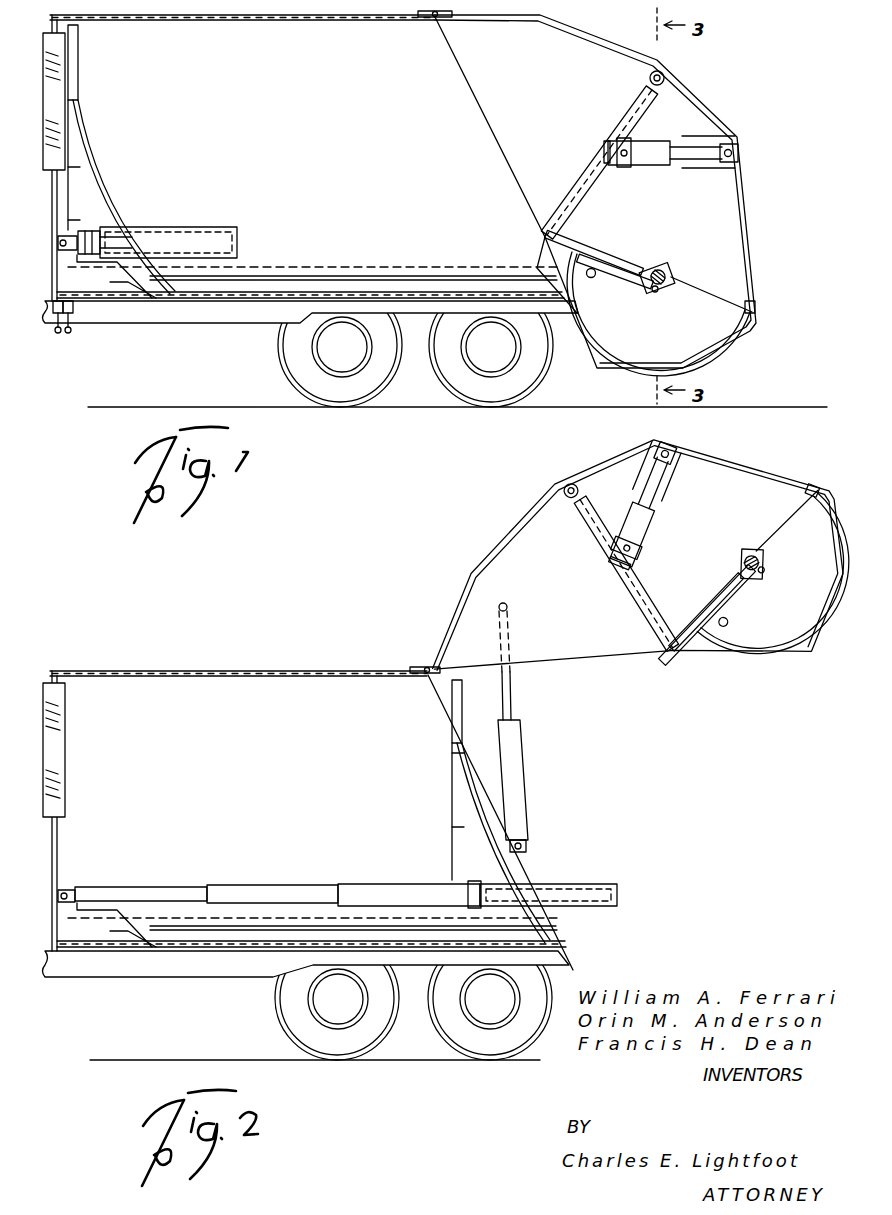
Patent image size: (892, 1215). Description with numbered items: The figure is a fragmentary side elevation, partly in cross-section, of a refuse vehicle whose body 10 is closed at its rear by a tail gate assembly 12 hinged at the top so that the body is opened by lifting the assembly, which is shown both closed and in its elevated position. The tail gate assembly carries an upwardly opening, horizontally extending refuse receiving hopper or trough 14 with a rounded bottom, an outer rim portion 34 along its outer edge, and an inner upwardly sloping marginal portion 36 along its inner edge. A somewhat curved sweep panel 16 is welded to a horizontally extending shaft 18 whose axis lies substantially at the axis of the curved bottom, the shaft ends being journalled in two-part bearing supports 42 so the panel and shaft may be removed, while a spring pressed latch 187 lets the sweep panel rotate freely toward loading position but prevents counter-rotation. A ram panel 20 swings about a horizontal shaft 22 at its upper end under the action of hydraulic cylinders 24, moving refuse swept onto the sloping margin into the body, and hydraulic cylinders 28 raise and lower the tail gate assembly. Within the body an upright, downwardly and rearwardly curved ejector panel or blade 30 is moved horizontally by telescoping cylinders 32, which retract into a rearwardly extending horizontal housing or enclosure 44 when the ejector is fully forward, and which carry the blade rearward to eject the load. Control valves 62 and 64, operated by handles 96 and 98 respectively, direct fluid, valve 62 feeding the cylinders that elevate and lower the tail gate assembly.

In FIG. 1, the body 10 is at (312, 259).
In FIG. 2, the body 10 is at (250, 671).
In FIG. 1, the tail gate assembly 12 is at (734, 122).
In FIG. 2, the tail gate assembly 12 is at (745, 456).
In FIG. 1, the refuse receiving hopper or trough 14 is at (600, 348).
In FIG. 2, the refuse receiving hopper or trough 14 is at (792, 645).
In FIG. 1, the sweep panel 16 is at (616, 265).
In FIG. 2, the sweep panel 16 is at (720, 605).
In FIG. 1, the shaft 18 is at (662, 270).
In FIG. 2, the shaft 18 is at (754, 552).
In FIG. 1, the spring pressed latch 187 is at (593, 278).
In FIG. 2, the spring pressed latch 187 is at (732, 623).
In FIG. 1, the ram panel 20 is at (580, 176).
In FIG. 2, the ram panel 20 is at (636, 627).
In FIG. 1, the horizontal shaft 22 is at (664, 76).
In FIG. 2, the horizontal shaft 22 is at (564, 492).
In FIG. 1, the hydraulic cylinders 24 is at (660, 142).
In FIG. 2, the hydraulic cylinders 24 is at (630, 511).
In FIG. 2, the hydraulic cylinders 28 is at (528, 752).
In FIG. 1, the ejector panel or blade 30 is at (95, 145).
In FIG. 2, the ejector panel or blade 30 is at (462, 784).
In FIG. 1, the telescoping cylinders 32 is at (110, 237).
In FIG. 2, the telescoping cylinders 32 is at (270, 888).
In FIG. 1, the outer rim portion 34 is at (756, 304).
In FIG. 2, the outer rim portion 34 is at (813, 496).
In FIG. 1, the inner upwardly sloping marginal portion 36 is at (586, 238).
In FIG. 2, the inner upwardly sloping marginal portion 36 is at (686, 656).
In FIG. 1, the bearing supports 42 is at (657, 293).
In FIG. 2, the bearing supports 42 is at (736, 562).
In FIG. 1, the horizontal housing or enclosure 44 is at (192, 227).
In FIG. 2, the horizontal housing or enclosure 44 is at (593, 884).
In FIG. 1, the control valve 62 is at (75, 306).
In FIG. 1, the control valve 64 is at (74, 313).
In FIG. 1, the handle 96 is at (58, 334).
In FIG. 1, the handle 98 is at (70, 334).